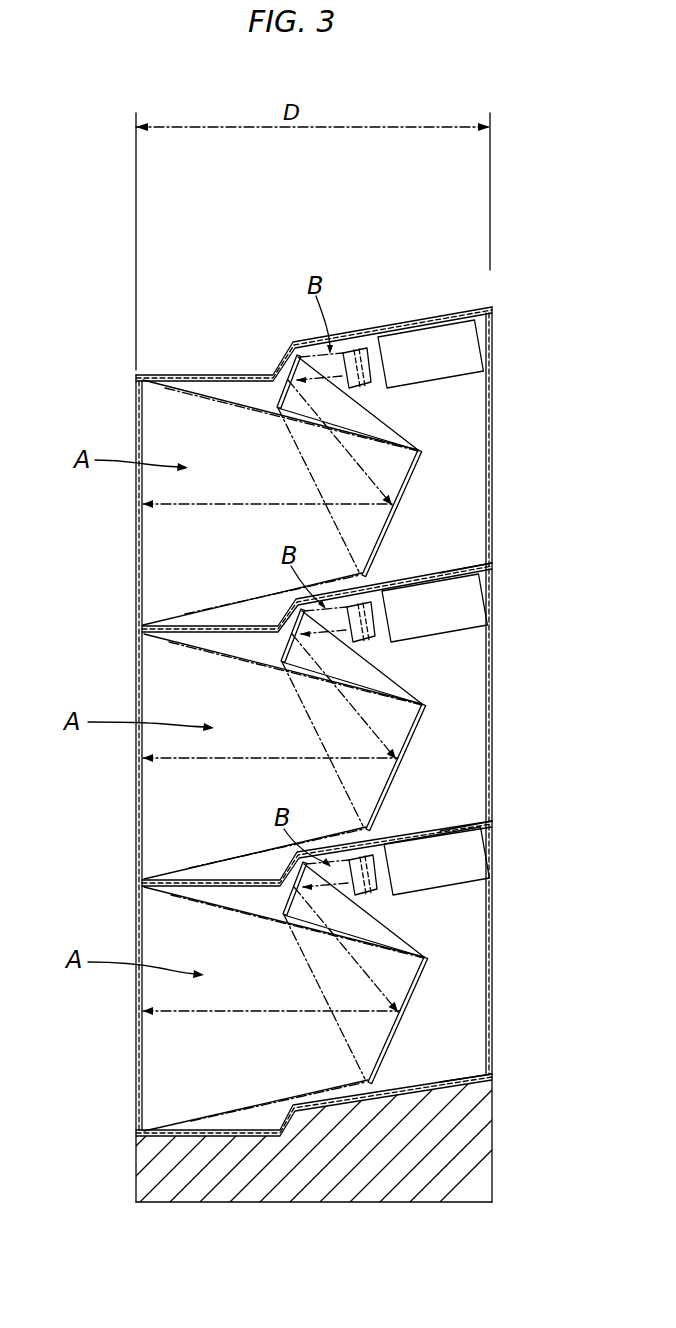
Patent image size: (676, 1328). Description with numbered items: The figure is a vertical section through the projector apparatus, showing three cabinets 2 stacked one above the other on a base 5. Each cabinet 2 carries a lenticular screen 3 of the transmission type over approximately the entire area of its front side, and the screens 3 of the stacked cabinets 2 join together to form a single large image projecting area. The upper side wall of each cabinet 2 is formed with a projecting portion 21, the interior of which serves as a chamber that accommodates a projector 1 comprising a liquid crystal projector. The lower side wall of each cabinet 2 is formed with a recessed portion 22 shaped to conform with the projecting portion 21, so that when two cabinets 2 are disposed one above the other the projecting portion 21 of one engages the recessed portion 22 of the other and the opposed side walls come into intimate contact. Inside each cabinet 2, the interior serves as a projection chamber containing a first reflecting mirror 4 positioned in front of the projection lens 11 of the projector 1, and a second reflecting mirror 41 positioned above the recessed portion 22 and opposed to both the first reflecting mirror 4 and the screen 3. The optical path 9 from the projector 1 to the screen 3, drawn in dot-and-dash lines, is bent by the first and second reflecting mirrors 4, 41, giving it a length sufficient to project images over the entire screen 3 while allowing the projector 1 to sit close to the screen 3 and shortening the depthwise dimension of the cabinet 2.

The projector 1 is at (447, 366).
The cabinet 2 is at (492, 490).
The lenticular screen 3 is at (135, 415).
The first reflecting mirror 4 is at (277, 400).
The base 5 is at (477, 1145).
The optical path 9 is at (229, 400).
The projection lens 11 is at (358, 385).
The projecting portion 21 is at (440, 314).
The recessed portion 22 is at (470, 580).
The second reflecting mirror 41 is at (411, 466).